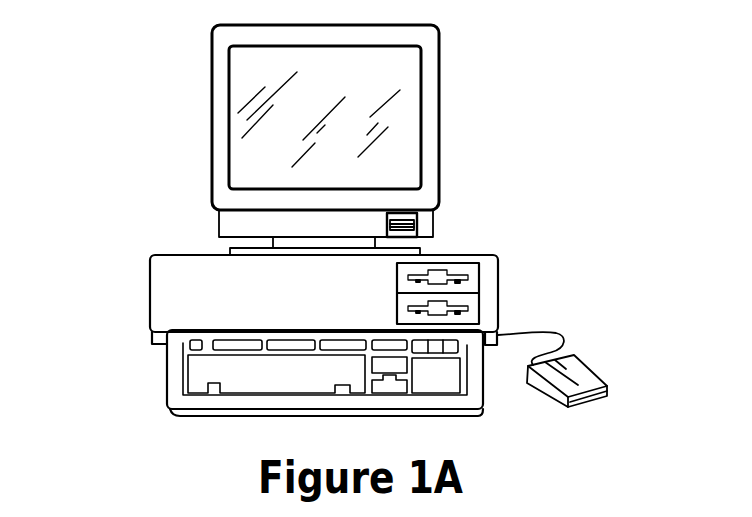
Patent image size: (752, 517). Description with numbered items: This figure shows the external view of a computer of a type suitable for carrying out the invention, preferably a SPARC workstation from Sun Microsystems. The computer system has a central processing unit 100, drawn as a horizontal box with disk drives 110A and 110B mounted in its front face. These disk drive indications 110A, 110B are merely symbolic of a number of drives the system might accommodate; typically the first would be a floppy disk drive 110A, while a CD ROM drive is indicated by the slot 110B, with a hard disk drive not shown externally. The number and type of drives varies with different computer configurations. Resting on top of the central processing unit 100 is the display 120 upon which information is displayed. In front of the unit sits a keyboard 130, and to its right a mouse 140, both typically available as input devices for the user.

The central processing unit 100 is at (262, 297).
The disk drive 110A is at (378, 278).
The disk drive 110B is at (378, 318).
The display 120 is at (442, 124).
The keyboard 130 is at (152, 386).
The mouse 140 is at (612, 370).